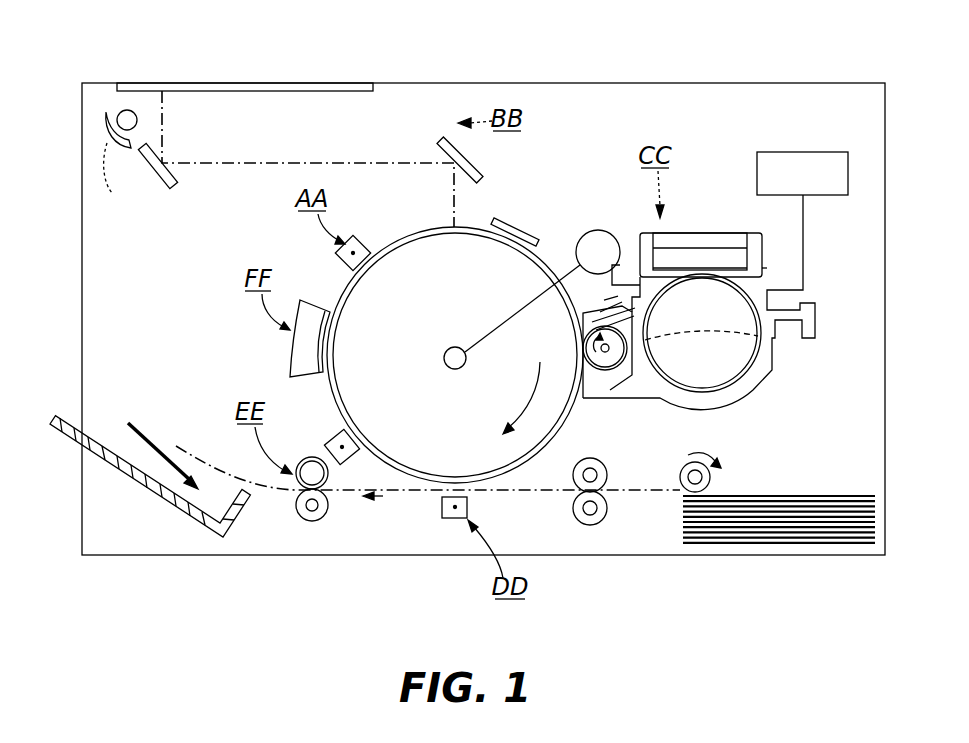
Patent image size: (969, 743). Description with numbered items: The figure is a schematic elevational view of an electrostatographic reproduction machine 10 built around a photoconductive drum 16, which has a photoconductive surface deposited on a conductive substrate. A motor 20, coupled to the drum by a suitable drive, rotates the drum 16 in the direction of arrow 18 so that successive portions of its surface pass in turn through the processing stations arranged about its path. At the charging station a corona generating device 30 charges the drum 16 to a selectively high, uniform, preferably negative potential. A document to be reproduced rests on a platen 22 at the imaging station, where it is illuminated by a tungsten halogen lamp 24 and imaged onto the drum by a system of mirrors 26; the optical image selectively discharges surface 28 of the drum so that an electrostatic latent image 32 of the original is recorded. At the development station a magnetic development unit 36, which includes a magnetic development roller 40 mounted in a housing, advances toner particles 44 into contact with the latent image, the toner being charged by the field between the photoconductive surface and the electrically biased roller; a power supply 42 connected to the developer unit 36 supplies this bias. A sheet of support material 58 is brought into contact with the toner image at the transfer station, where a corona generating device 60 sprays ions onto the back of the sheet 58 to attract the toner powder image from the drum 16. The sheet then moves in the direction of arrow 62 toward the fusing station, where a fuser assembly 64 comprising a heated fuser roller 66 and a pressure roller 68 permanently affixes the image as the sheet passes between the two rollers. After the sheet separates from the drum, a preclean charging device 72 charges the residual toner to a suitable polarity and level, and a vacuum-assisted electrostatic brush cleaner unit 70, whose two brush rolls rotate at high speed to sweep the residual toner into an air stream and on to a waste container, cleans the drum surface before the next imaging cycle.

The electrostatographic reproduction machine 10 is at (549, 75).
The photoconductive drum 16 is at (567, 226).
The arrow 18 is at (535, 388).
The motor 20 is at (612, 235).
The platen 22 is at (345, 83).
The tungsten halogen lamp 24 is at (105, 143).
The mirrors 26 is at (160, 186).
The surface 28 is at (478, 222).
The corona generating device 30 is at (361, 243).
The electrostatic latent image 32 is at (527, 232).
The magnetic development unit 36 is at (691, 203).
The magnetic development roller 40 is at (604, 355).
The power supply 42 is at (768, 150).
The toner particles 44 is at (712, 352).
The sheet of support material 58 is at (777, 496).
The corona generating device 60 is at (444, 514).
The arrow 62 is at (394, 498).
The fuser assembly 64 is at (278, 520).
The heated fuser roller 66 is at (310, 470).
The pressure roller 68 is at (326, 512).
The brush cleaner unit 70 is at (305, 298).
The preclean charging device 72 is at (349, 440).